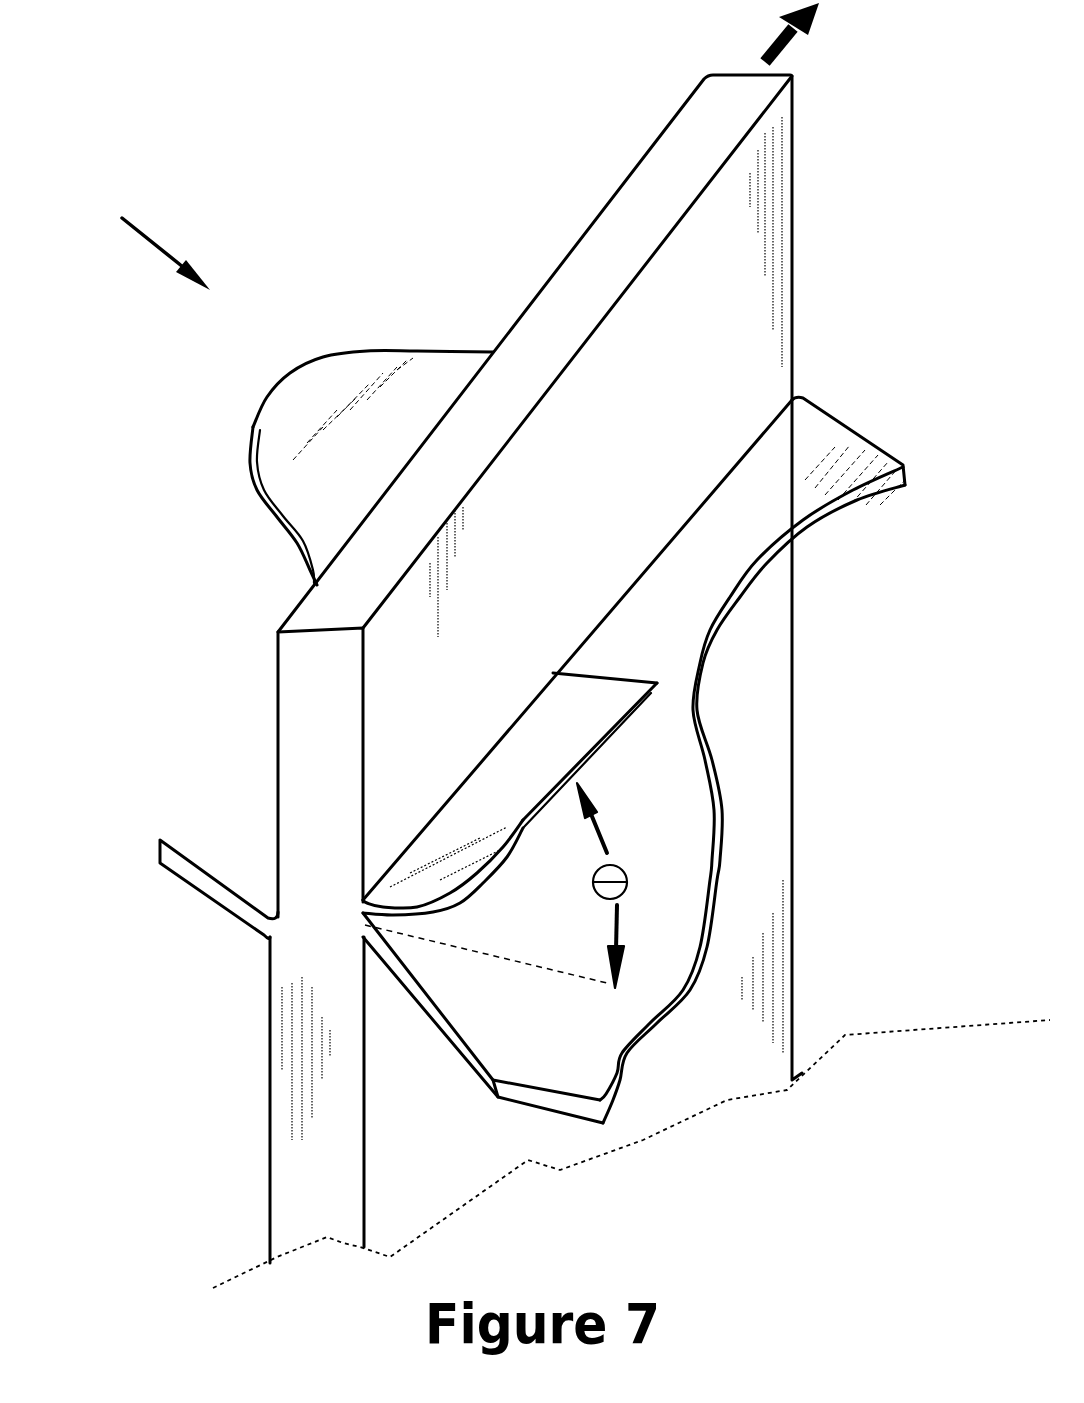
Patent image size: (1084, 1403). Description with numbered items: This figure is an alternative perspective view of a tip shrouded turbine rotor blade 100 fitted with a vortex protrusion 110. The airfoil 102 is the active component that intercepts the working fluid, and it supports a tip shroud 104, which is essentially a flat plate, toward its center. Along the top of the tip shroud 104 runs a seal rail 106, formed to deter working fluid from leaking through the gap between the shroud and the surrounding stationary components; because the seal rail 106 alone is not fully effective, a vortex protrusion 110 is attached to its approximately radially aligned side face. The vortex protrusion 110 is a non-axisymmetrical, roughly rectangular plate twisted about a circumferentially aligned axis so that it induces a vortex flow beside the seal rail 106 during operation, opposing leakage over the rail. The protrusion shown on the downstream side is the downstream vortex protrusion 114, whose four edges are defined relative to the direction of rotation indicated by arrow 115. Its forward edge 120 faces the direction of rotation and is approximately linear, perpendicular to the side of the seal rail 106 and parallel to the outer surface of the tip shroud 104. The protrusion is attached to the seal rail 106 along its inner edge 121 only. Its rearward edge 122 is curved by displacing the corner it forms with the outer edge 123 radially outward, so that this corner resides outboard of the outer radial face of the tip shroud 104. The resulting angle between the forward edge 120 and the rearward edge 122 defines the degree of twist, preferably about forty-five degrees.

The tip shrouded turbine rotor blade 100 is at (129, 239).
The airfoil 102 is at (488, 1165).
The tip shroud 104 is at (297, 447).
The seal rail 106 is at (573, 300).
The vortex protrusion 110 is at (550, 737).
The downstream vortex protrusion 114 is at (483, 820).
The arrow 115 is at (797, 38).
The forward edge 120 is at (627, 673).
The inner edge 121 is at (460, 790).
The rearward edge 122 is at (454, 907).
The outer edge 123 is at (625, 737).